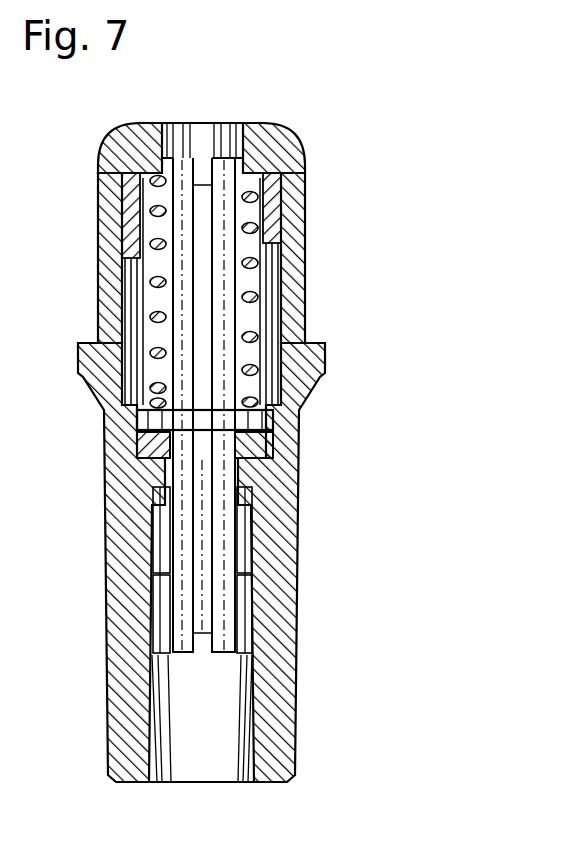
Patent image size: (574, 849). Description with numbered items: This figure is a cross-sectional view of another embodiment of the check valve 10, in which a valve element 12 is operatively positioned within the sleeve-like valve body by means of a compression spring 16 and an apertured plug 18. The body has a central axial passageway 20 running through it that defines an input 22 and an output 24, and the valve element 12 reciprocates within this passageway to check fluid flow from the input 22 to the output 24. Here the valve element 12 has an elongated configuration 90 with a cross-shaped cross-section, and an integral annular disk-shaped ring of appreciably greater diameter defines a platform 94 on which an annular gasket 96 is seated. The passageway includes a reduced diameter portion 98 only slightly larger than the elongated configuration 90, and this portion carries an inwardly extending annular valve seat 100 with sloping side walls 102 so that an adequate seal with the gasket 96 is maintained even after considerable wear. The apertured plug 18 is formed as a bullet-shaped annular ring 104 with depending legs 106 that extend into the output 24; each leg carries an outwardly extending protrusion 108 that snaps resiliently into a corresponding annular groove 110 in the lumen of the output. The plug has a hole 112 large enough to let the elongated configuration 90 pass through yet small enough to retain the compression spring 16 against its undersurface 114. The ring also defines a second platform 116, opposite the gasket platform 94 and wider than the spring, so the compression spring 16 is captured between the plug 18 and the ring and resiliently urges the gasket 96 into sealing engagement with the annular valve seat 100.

The check valve 10 is at (96, 100).
The valve element 12 is at (234, 258).
The compression spring 16 is at (155, 238).
The apertured plug 18 is at (224, 147).
The central axial passageway 20 is at (144, 292).
The input 22 is at (200, 790).
The output 24 is at (189, 66).
The elongated configuration 90 is at (231, 549).
The platform 94 is at (152, 413).
The annular gasket 96 is at (151, 446).
The reduced diameter portion 98 is at (265, 566).
The annular valve seat 100 is at (273, 555).
The sloping side walls 102 is at (269, 502).
The bullet-shaped annular ring 104 is at (293, 126).
The depending legs 106 is at (319, 291).
The outwardly extending protrusion 108 is at (328, 292).
The annular groove 110 is at (325, 306).
The hole 112 is at (225, 106).
The undersurface 114 is at (161, 153).
The platform 116 is at (83, 291).